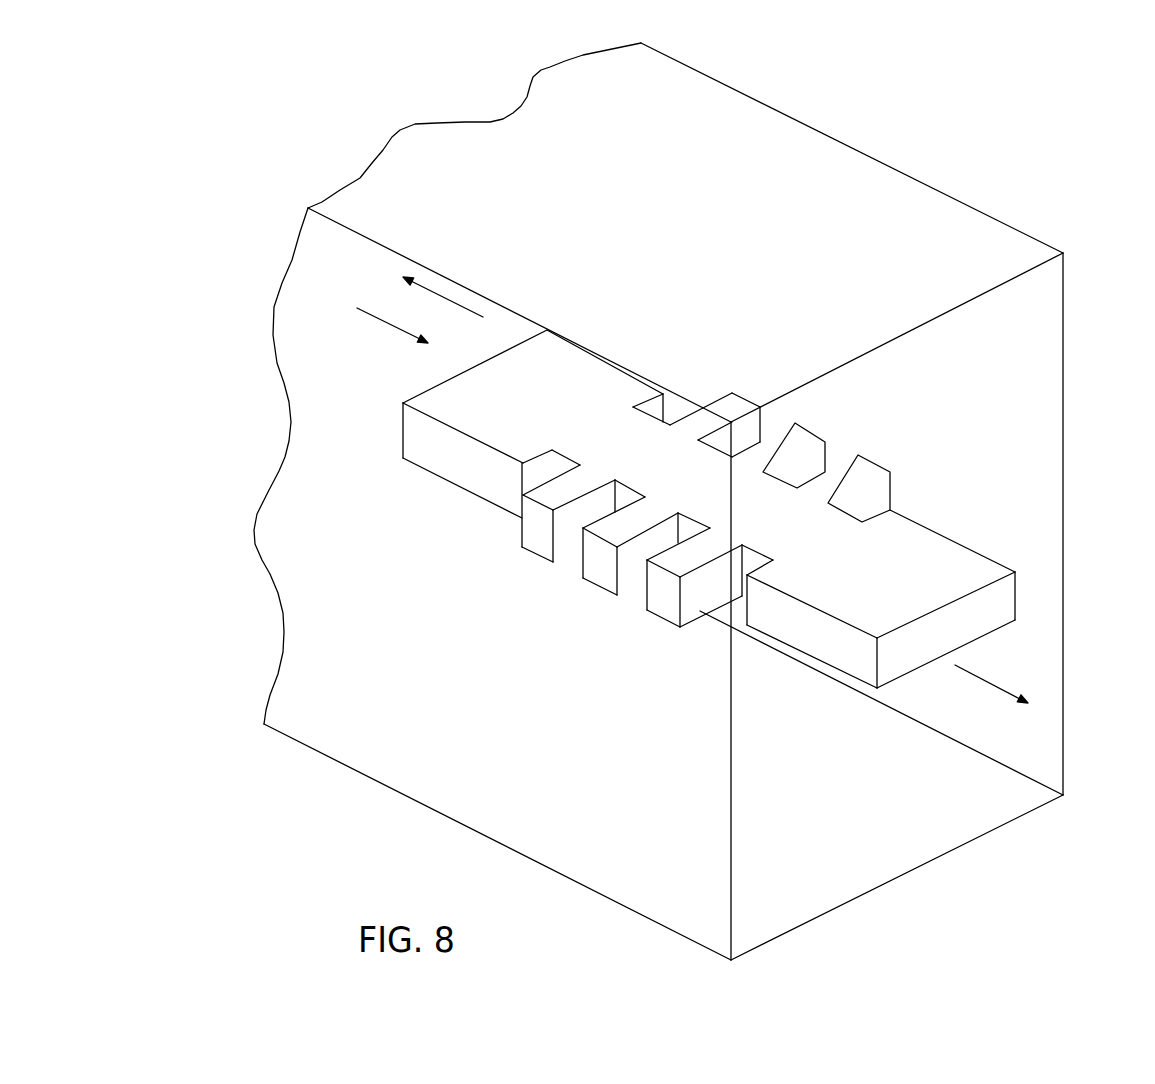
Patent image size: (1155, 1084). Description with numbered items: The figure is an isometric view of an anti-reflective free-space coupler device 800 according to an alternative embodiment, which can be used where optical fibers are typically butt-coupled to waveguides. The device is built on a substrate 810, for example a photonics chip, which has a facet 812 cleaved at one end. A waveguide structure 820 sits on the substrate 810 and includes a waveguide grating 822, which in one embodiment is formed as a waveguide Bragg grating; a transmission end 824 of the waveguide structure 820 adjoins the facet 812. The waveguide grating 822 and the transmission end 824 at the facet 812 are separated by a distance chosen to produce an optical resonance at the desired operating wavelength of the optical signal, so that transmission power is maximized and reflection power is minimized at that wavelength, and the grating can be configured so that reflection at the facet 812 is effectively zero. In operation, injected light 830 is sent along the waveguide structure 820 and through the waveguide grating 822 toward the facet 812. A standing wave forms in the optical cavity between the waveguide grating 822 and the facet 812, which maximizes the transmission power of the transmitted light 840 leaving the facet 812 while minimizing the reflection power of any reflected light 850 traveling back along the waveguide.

The anti-reflective free-space coupler device 800 is at (805, 113).
The substrate 810 is at (372, 789).
The facet 812 is at (1063, 440).
The waveguide structure 820 is at (447, 489).
The waveguide grating 822 is at (678, 638).
The transmission end 824 is at (1018, 600).
The injected light 830 is at (370, 317).
The transmitted light 840 is at (1002, 683).
The reflected light 850 is at (468, 314).